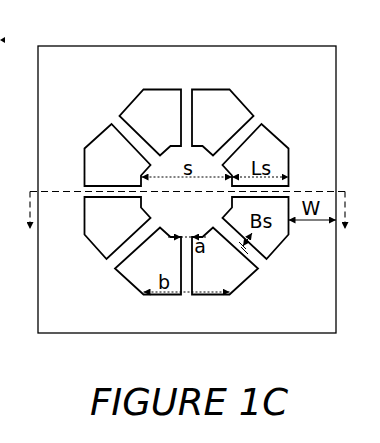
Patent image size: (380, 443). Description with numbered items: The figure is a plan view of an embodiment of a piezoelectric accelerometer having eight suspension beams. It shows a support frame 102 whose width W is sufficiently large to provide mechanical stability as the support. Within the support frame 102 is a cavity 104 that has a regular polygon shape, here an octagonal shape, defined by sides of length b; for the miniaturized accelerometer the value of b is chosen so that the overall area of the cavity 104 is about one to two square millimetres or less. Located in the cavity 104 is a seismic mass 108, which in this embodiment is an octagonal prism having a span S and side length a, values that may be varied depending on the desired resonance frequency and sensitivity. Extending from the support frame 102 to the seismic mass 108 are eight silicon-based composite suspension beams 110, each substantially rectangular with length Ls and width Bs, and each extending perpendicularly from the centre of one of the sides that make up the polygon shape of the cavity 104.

The support frame 102 is at (266, 80).
The cavity 104 is at (197, 121).
The seismic mass 108 is at (170, 220).
The suspension beams 110 is at (128, 134).